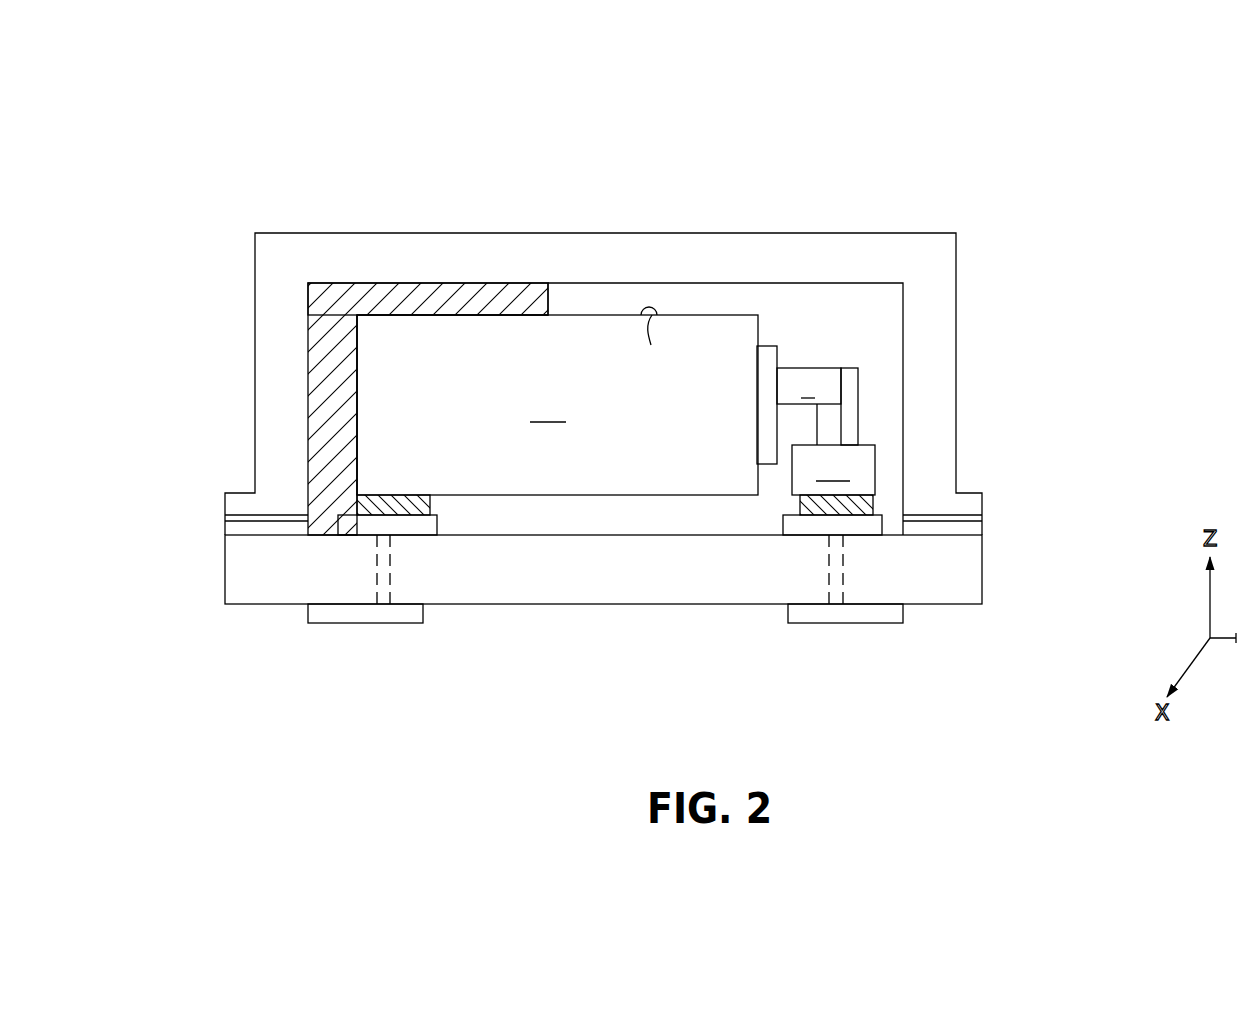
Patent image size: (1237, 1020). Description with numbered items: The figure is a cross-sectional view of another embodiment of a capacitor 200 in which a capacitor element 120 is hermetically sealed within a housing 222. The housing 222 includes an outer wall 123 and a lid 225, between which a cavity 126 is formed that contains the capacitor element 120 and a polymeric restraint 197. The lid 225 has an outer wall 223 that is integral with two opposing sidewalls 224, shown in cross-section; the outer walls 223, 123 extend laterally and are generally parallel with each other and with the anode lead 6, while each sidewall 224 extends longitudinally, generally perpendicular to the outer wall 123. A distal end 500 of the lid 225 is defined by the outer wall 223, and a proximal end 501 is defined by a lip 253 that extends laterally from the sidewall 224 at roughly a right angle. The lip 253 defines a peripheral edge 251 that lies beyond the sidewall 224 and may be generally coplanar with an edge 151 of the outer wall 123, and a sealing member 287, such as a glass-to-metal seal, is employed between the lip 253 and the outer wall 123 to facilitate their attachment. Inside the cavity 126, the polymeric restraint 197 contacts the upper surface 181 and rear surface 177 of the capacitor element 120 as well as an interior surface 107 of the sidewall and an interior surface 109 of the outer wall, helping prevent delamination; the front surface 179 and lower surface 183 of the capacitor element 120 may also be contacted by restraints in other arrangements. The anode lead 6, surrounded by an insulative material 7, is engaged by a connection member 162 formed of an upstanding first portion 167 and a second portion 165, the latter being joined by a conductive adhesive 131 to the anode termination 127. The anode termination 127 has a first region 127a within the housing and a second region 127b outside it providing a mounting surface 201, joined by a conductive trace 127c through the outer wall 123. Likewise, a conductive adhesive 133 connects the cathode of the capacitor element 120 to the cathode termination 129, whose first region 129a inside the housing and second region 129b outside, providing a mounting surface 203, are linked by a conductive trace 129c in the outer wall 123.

The capacitor 200 is at (1027, 188).
The distal end 500 is at (897, 230).
The outer wall 223 is at (605, 351).
The lid 225 is at (545, 268).
The polymeric restraint 197 is at (437, 300).
The interior surface 107 is at (310, 355).
The rear surface 177 is at (357, 405).
The capacitor element 120 is at (557, 405).
The upper surface 181 is at (656, 337).
The front surface 179 is at (757, 390).
The insulative material 7 is at (767, 362).
The anode lead 6 is at (809, 406).
The first portion 167 is at (848, 400).
The second portion 165 is at (833, 470).
The connection member 162 is at (868, 440).
The conductive adhesive 131 is at (877, 497).
The conductive adhesive 133 is at (410, 500).
The lower surface 183 is at (680, 497).
The cavity 126 is at (767, 307).
The sidewall 224 is at (282, 390).
The lip 253 is at (238, 503).
The housing 222 is at (183, 455).
The peripheral edge 251 is at (223, 505).
The sealing member 287 is at (230, 523).
The edge 151 is at (223, 590).
The proximal end 501 is at (932, 519).
The interior surface 109 is at (580, 533).
The outer wall 123 is at (590, 585).
The cathode termination 129 is at (362, 610).
The first region 129a is at (350, 528).
The second region 129b is at (327, 618).
The conductive trace 129c is at (392, 568).
The mounting surface 203 is at (413, 625).
The anode termination 127 is at (885, 601).
The first region 127a is at (805, 525).
The second region 127b is at (877, 612).
The conductive trace 127c is at (838, 583).
The mounting surface 201 is at (800, 625).